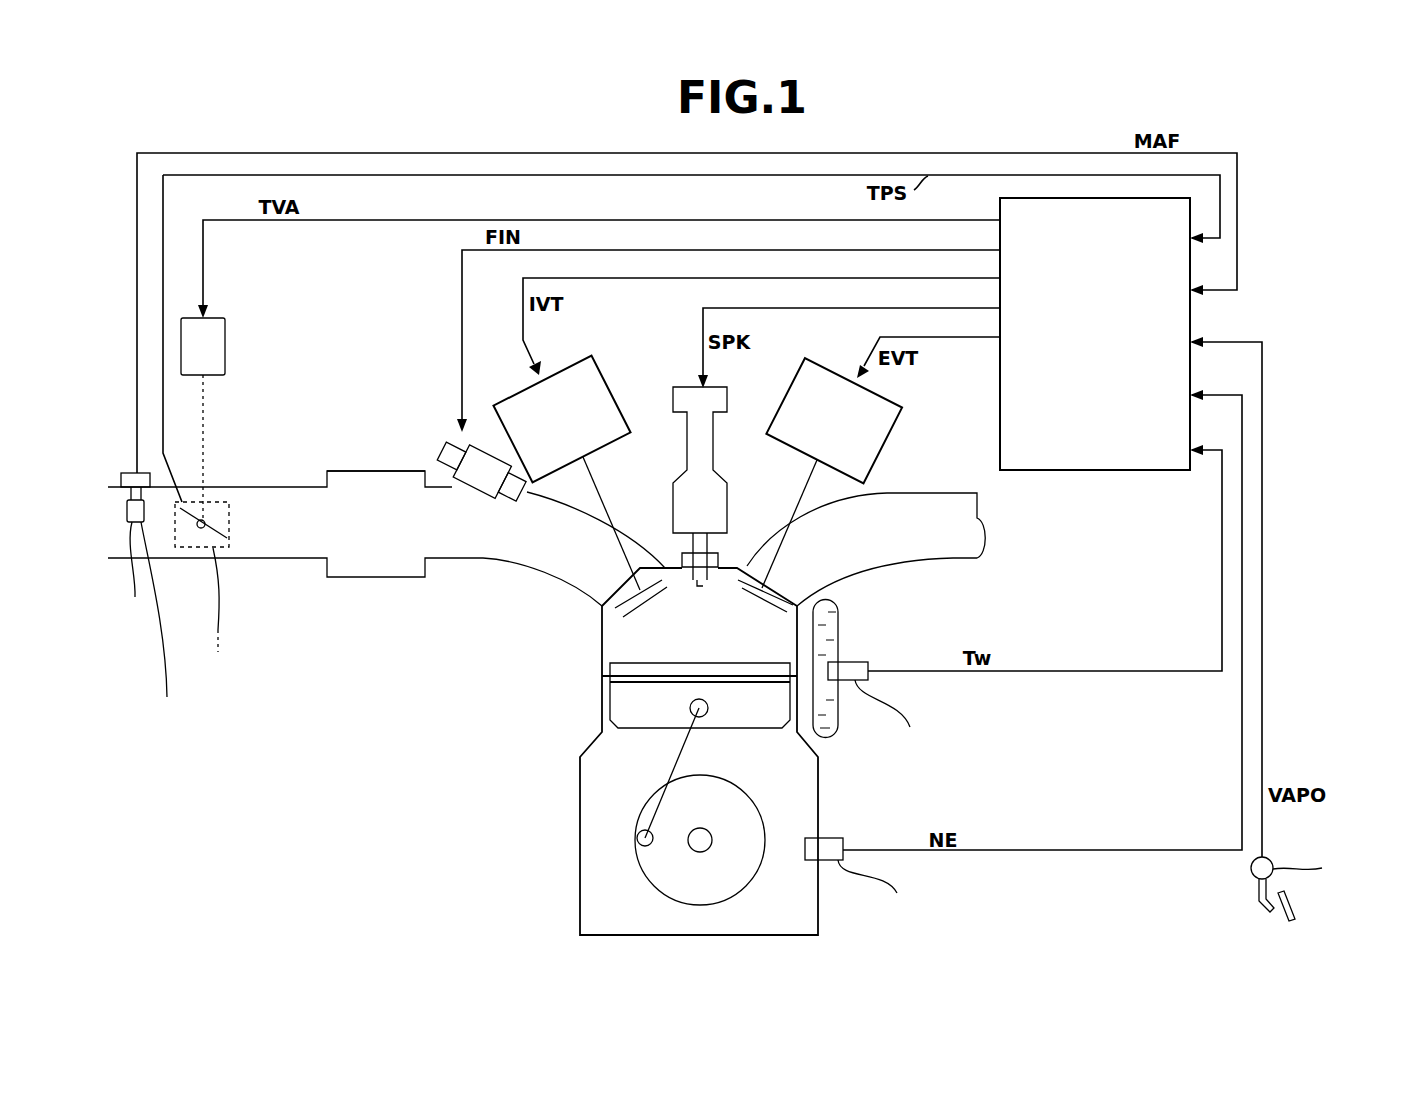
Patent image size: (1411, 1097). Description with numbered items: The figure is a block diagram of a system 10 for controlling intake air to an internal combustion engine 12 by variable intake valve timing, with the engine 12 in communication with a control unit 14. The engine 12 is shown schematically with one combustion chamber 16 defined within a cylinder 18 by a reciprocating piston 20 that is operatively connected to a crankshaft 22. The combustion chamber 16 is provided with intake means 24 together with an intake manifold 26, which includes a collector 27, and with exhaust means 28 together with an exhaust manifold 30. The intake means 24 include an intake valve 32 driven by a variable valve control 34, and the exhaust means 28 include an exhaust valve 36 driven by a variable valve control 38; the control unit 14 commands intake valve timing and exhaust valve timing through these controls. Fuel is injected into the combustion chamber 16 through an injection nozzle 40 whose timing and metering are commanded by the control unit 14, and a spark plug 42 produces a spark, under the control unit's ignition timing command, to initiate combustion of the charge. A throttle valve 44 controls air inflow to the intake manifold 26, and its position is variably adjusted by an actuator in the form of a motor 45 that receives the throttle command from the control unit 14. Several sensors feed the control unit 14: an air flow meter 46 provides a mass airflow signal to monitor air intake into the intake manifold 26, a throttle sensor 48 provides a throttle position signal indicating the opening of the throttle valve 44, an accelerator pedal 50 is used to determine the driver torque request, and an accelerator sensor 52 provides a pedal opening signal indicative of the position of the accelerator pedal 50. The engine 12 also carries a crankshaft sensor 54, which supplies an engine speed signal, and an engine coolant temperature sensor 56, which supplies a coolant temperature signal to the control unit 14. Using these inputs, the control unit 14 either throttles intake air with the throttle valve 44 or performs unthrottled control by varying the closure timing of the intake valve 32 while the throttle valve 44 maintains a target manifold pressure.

The system 10 is at (1264, 144).
The internal combustion engine 12 is at (530, 750).
The control unit 14 is at (1093, 470).
The combustion chamber 16 is at (701, 654).
The cylinder 18 is at (600, 636).
The piston 20 is at (637, 717).
The crankshaft 22 is at (690, 891).
The intake means 24 is at (613, 348).
The intake manifold 26 is at (266, 486).
The collector 27 is at (376, 468).
The exhaust means 28 is at (787, 346).
The exhaust manifold 30 is at (918, 560).
The intake valve 32 is at (625, 606).
The variable valve control 34 is at (515, 392).
The exhaust valve 36 is at (738, 584).
The variable valve control 38 is at (842, 368).
The injection nozzle 40 is at (500, 500).
The spark plug 42 is at (717, 493).
The throttle valve 44 is at (228, 535).
The motor 45 is at (225, 345).
The air flow meter 46 is at (165, 610).
The throttle sensor 48 is at (193, 548).
The accelerator pedal 50 is at (1297, 910).
The accelerator sensor 52 is at (1270, 861).
The crankshaft sensor 54 is at (832, 838).
The engine coolant temperature sensor 56 is at (860, 662).